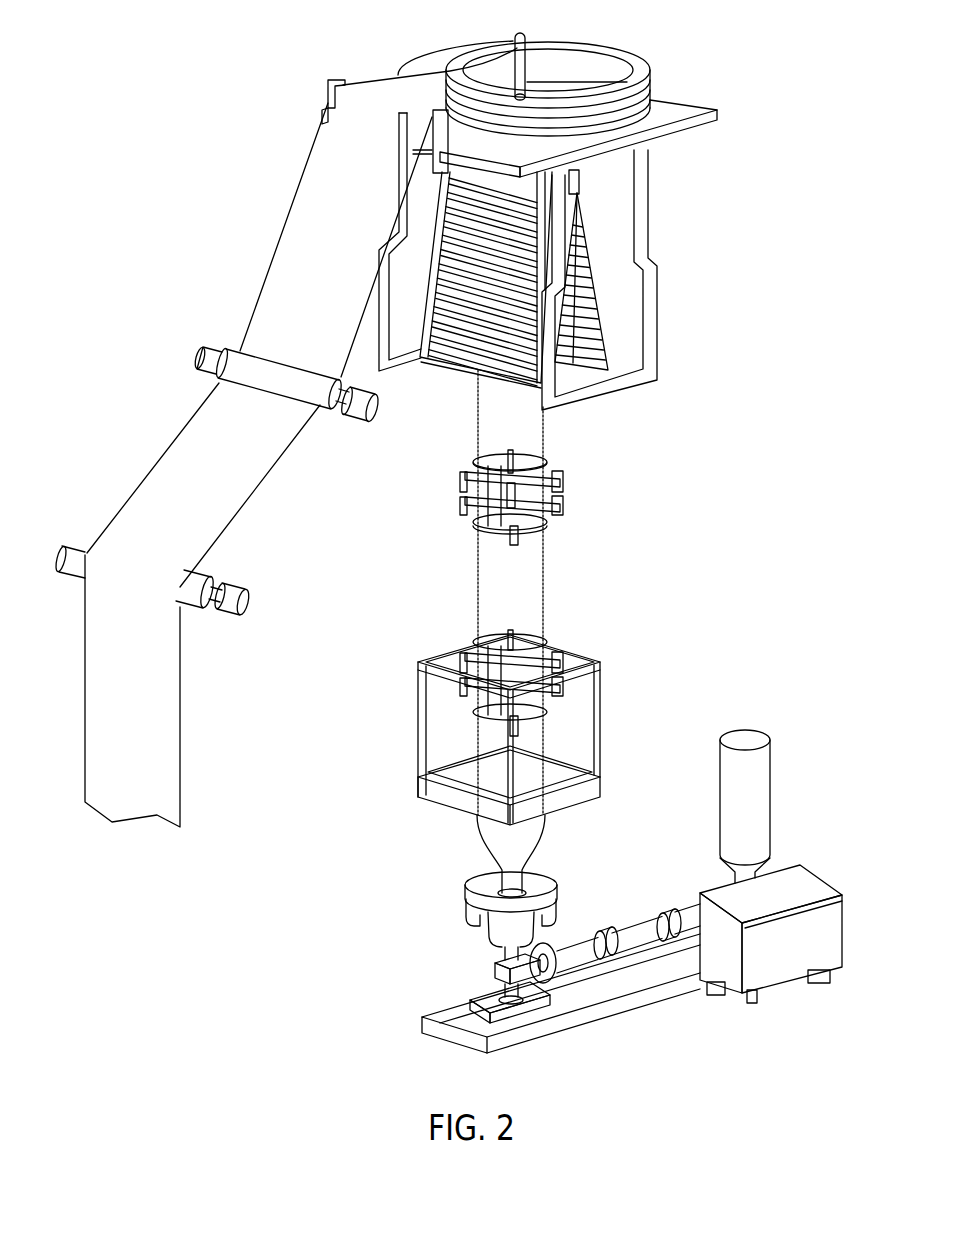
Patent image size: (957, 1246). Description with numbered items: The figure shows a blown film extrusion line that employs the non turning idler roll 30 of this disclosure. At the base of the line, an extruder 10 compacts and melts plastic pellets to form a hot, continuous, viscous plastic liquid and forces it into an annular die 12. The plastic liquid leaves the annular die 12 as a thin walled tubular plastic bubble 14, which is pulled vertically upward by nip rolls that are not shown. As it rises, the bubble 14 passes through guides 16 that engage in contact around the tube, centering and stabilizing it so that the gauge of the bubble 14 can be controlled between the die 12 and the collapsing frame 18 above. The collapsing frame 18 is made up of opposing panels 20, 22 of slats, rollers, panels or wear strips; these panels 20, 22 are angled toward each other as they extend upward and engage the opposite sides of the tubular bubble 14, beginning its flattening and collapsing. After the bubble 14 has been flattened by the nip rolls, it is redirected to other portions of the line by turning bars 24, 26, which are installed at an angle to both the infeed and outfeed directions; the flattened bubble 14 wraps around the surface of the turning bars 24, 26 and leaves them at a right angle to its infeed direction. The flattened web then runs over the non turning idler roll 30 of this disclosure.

The extruder 10 is at (798, 893).
The annular die 12 is at (537, 886).
The tubular plastic bubble 14 is at (530, 838).
The guides 16 is at (548, 493).
The collapsing frame 18 is at (643, 212).
The opposing panel 20 is at (466, 378).
The opposing panel 22 is at (605, 343).
The turning bar 24 is at (613, 83).
The turning bar 26 is at (537, 42).
The non turning idler roll 30 is at (204, 351).